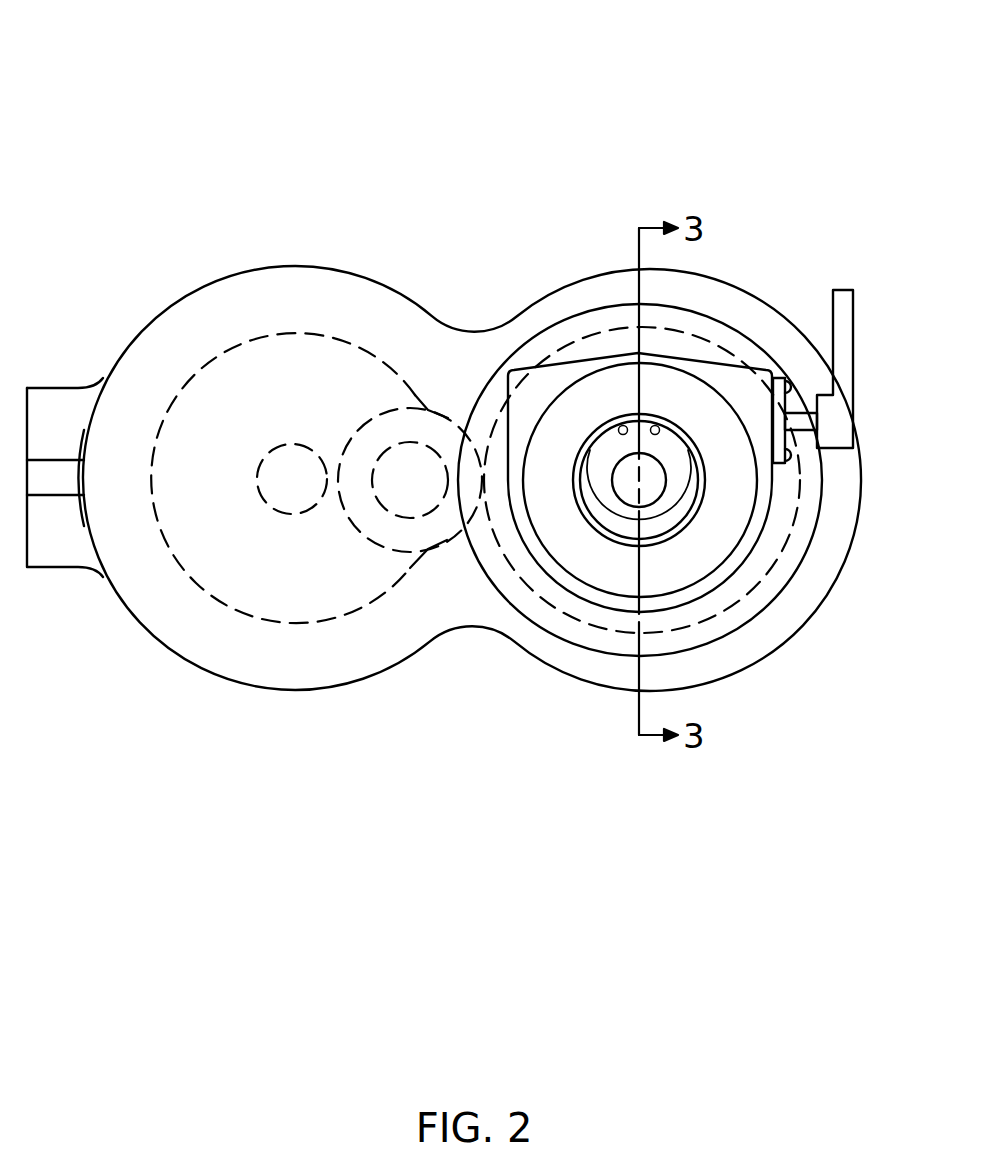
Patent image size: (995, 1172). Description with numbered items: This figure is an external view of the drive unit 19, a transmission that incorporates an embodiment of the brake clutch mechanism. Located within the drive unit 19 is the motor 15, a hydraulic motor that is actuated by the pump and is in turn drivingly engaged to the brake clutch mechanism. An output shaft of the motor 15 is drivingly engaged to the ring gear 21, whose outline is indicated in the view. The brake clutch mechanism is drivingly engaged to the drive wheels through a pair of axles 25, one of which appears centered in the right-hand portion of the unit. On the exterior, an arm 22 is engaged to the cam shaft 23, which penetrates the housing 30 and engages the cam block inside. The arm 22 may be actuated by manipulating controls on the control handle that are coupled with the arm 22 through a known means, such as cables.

The drive unit 19 is at (157, 79).
The motor 15 is at (237, 611).
The ring gear 21 is at (562, 617).
The arm 22 is at (853, 313).
The cam shaft 23 is at (807, 455).
The axles 25 is at (658, 496).
The housing 30 is at (793, 618).